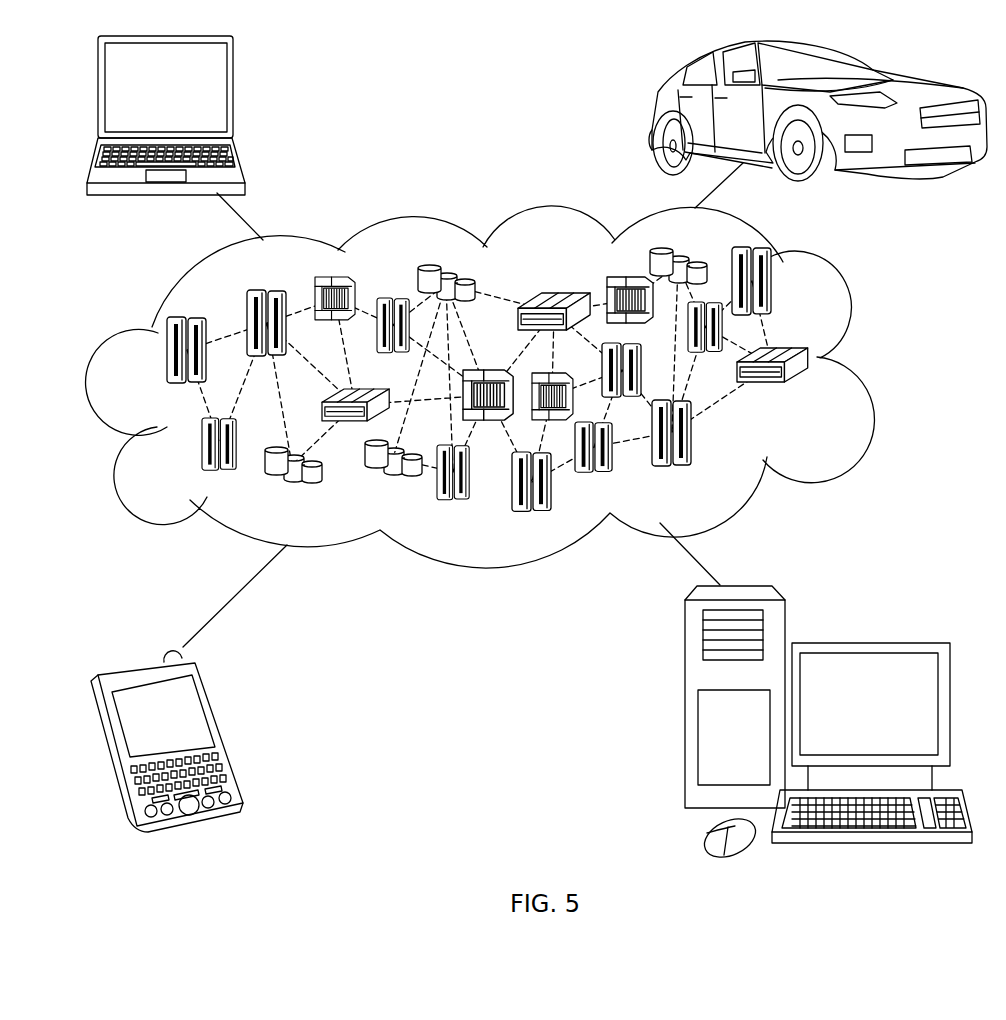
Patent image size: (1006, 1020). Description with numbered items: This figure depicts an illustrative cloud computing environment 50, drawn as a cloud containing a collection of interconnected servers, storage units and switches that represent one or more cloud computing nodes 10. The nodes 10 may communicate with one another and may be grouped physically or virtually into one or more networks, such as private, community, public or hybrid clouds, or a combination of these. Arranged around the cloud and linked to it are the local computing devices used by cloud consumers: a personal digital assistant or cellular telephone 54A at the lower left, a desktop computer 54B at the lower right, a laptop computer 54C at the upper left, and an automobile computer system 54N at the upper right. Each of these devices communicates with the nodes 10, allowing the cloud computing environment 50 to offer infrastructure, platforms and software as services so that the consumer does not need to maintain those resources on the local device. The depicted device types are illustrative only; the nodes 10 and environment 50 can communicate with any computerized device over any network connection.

The cloud computing node 10 is at (810, 395).
The cloud computing environment 50 is at (850, 362).
The personal digital assistant or cellular telephone 54A is at (222, 729).
The desktop computer 54B is at (868, 643).
The laptop computer 54C is at (232, 97).
The automobile computer system 54N is at (656, 112).